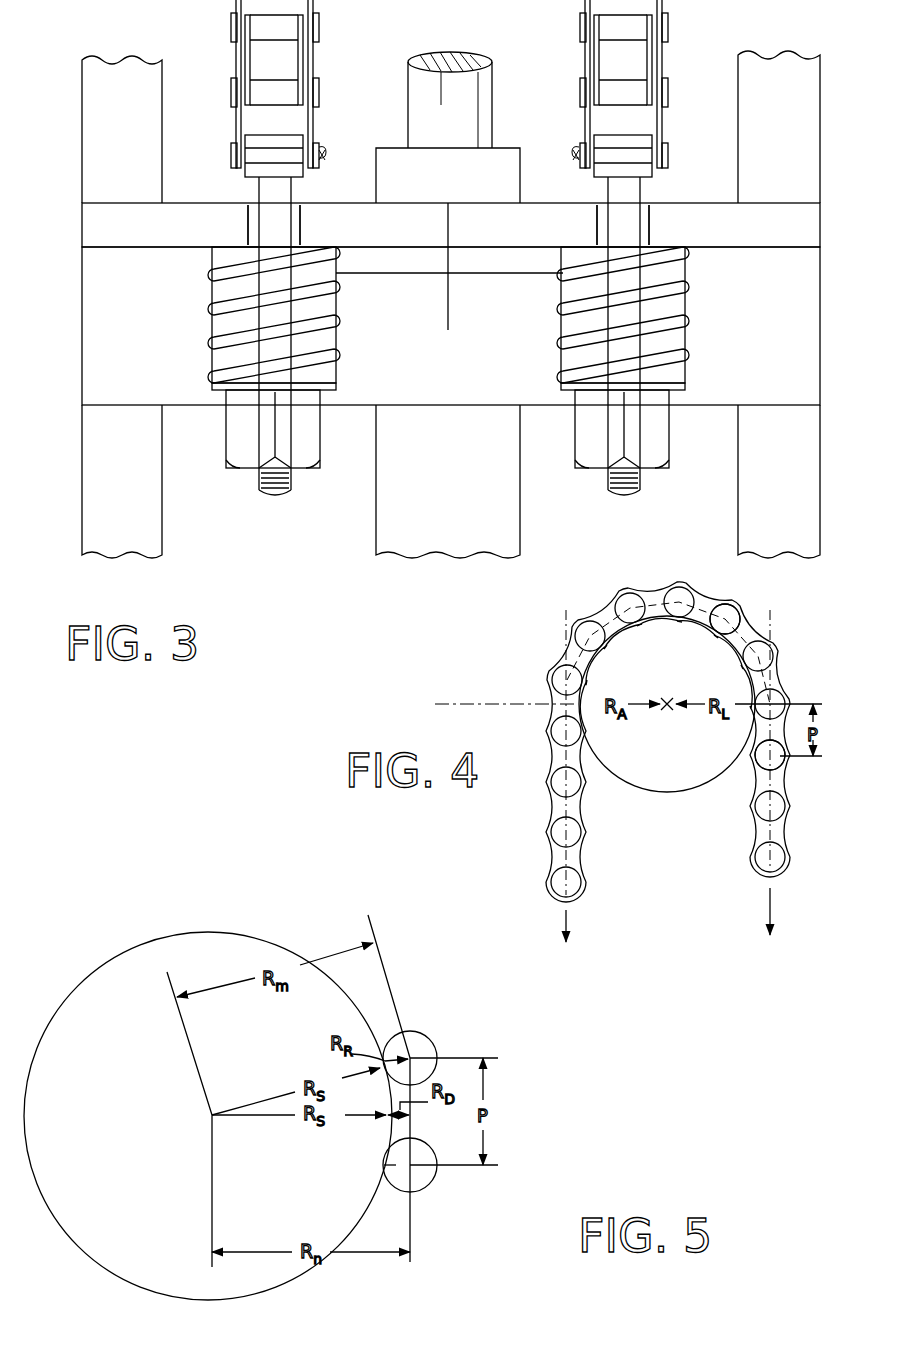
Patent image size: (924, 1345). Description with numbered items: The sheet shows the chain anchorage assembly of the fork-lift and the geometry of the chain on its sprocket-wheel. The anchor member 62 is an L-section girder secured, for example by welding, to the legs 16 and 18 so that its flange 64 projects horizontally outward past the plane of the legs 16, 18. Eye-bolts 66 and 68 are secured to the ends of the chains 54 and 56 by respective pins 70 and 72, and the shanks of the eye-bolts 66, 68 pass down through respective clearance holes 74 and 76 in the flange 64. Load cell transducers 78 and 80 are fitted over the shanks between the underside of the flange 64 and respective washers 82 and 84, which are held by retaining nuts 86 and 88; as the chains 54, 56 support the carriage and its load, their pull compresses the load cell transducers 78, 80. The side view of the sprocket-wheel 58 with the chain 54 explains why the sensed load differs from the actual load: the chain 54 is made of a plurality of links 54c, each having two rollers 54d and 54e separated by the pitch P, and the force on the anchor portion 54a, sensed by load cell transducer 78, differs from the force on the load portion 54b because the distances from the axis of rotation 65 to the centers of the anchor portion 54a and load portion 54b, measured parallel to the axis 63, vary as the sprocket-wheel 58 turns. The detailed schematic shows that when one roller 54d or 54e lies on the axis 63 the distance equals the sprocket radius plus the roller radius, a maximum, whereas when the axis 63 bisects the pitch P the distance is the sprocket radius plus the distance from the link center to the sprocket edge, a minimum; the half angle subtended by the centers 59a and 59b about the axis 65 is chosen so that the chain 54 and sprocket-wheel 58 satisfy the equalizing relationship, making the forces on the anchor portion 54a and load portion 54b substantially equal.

In FIG. 3, the leg 16 is at (752, 520).
In FIG. 3, the leg 18 is at (140, 512).
In FIG. 3, the chain 54 is at (651, 84).
In FIG. 3, the chain 56 is at (316, 78).
In FIG. 3, the anchor member 62 is at (790, 293).
In FIG. 3, the flange 64 is at (785, 228).
In FIG. 3, the eye-bolt 66 is at (659, 333).
In FIG. 3, the eye-bolt 68 is at (265, 195).
In FIG. 3, the pin 70 is at (651, 151).
In FIG. 3, the pin 72 is at (236, 155).
In FIG. 3, the clearance hole 74 is at (592, 205).
In FIG. 3, the clearance hole 76 is at (305, 215).
In FIG. 3, the load cell transducer 78 is at (658, 315).
In FIG. 3, the load cell transducer 80 is at (236, 302).
In FIG. 3, the washer 82 is at (649, 422).
In FIG. 3, the washer 84 is at (310, 388).
In FIG. 3, the retaining nut 86 is at (601, 434).
In FIG. 3, the retaining nut 88 is at (237, 430).
In FIG. 4, the anchor portion 54a is at (525, 845).
In FIG. 4, the load portion 54b is at (815, 842).
In FIG. 4, the link 54c is at (757, 626).
In FIG. 4, the roller 54d is at (779, 700).
In FIG. 5, the roller 54d is at (436, 1052).
In FIG. 4, the roller 54e is at (779, 760).
In FIG. 5, the roller 54e is at (420, 1192).
In FIG. 4, the sprocket-wheel 58 is at (773, 659).
In FIG. 4, the axis 63 is at (446, 700).
In FIG. 4, the axis of rotation 65 is at (670, 700).
In FIG. 5, the center 59a is at (412, 1056).
In FIG. 5, the center 59b is at (414, 1167).